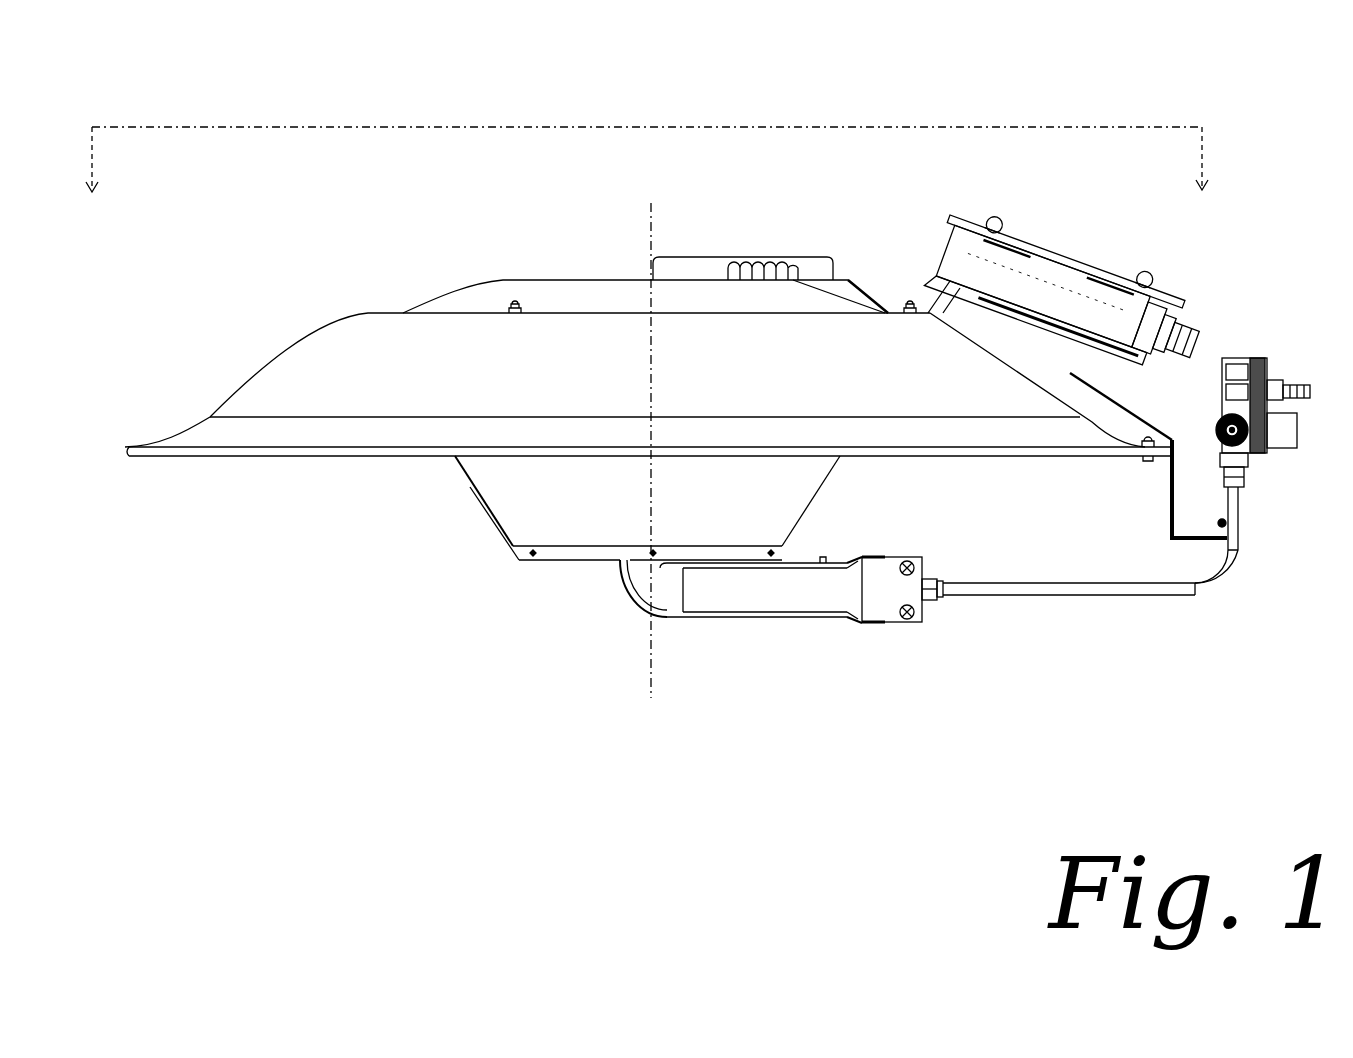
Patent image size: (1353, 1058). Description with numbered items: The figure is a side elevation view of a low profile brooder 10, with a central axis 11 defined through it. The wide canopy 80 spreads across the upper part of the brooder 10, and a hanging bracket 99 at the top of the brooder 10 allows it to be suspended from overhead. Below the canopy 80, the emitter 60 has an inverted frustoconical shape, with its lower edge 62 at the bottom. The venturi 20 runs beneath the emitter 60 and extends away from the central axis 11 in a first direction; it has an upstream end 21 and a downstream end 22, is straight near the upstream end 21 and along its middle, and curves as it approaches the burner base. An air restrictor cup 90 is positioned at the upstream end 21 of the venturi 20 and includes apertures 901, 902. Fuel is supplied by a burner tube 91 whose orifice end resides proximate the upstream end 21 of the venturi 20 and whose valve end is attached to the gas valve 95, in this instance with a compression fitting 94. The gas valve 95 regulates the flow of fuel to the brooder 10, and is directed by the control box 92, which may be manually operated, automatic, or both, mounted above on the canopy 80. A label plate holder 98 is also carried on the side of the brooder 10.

The brooder 10 is at (695, 379).
The central axis 11 is at (651, 232).
The venturi 20 is at (722, 593).
The upstream end 21 is at (877, 623).
The downstream end 22 is at (617, 565).
The emitter 60 is at (473, 490).
The lower edge 62 is at (518, 562).
The canopy 80 is at (371, 332).
The air restrictor cup 90 is at (883, 608).
The burner tube 91 is at (1120, 590).
The control box 92 is at (980, 257).
The compression fitting 94 is at (937, 598).
The gas valve 95 is at (1265, 358).
The label plate holder 98 is at (1083, 375).
The hanging bracket 99 is at (713, 270).
The aperture 901 is at (910, 622).
The aperture 902 is at (913, 558).